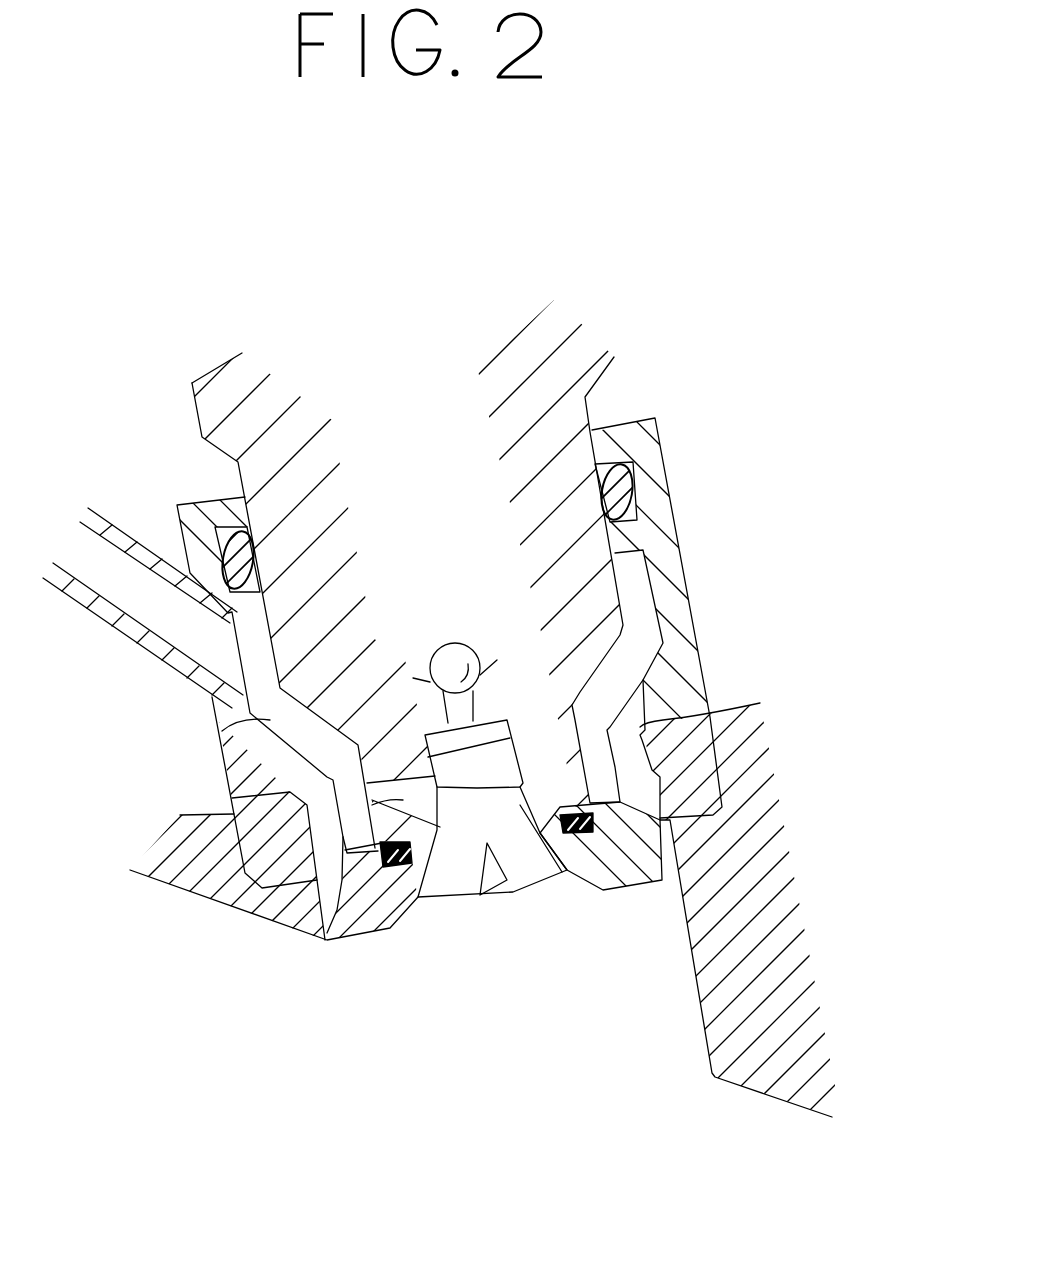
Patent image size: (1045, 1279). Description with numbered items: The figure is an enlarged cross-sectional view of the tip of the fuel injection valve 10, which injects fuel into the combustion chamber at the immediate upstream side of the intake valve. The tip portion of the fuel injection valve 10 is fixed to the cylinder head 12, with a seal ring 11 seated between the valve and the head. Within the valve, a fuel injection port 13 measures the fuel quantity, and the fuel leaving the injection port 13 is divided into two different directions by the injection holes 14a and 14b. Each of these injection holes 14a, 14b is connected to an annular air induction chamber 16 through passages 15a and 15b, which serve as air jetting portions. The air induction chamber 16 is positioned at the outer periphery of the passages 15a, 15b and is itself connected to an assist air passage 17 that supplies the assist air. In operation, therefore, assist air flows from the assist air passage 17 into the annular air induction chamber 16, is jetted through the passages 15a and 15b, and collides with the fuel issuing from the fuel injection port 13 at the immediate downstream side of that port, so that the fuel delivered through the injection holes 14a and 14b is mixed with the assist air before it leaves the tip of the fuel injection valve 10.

The fuel injection valve 10 is at (703, 582).
The seal ring 11 is at (703, 760).
The cylinder head 12 is at (703, 1023).
The fuel injection port 13 is at (473, 710).
The injection hole 14a is at (455, 888).
The injection hole 14b is at (532, 872).
The passage 15a is at (333, 930).
The passage 15b is at (557, 770).
The annular air induction chamber 16 is at (218, 744).
The assist air passage 17 is at (143, 595).